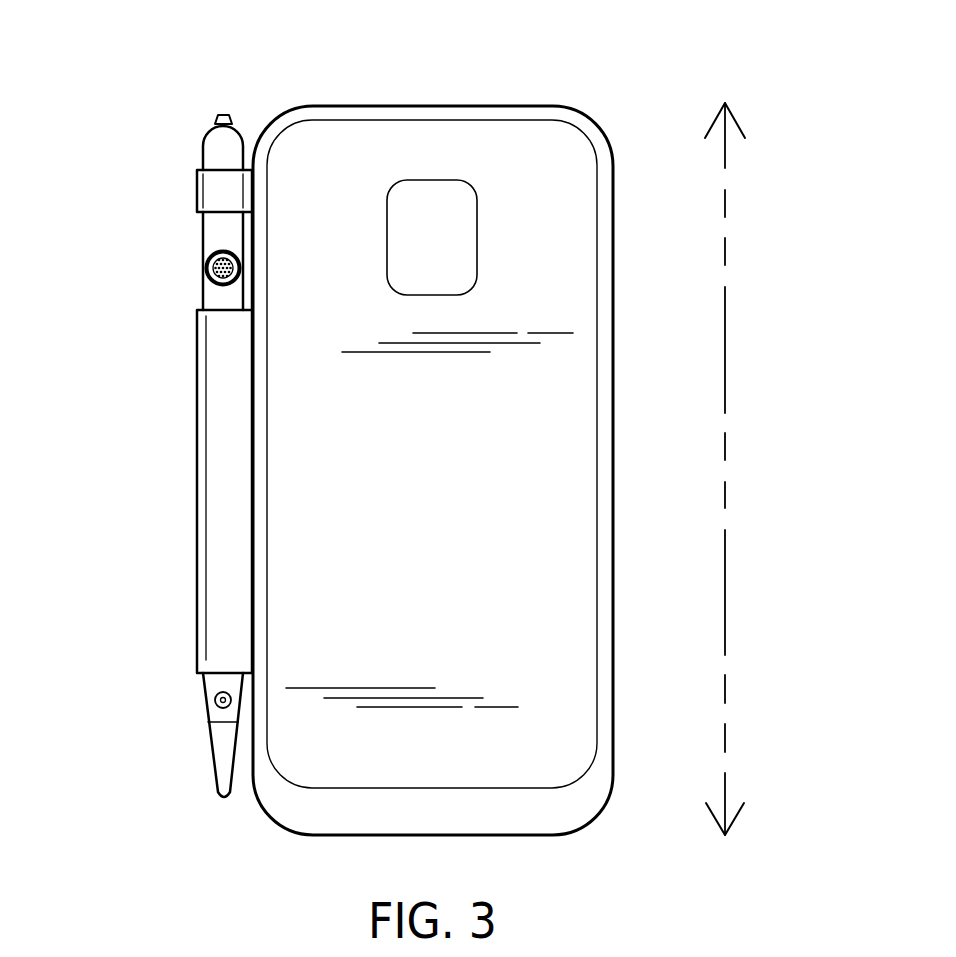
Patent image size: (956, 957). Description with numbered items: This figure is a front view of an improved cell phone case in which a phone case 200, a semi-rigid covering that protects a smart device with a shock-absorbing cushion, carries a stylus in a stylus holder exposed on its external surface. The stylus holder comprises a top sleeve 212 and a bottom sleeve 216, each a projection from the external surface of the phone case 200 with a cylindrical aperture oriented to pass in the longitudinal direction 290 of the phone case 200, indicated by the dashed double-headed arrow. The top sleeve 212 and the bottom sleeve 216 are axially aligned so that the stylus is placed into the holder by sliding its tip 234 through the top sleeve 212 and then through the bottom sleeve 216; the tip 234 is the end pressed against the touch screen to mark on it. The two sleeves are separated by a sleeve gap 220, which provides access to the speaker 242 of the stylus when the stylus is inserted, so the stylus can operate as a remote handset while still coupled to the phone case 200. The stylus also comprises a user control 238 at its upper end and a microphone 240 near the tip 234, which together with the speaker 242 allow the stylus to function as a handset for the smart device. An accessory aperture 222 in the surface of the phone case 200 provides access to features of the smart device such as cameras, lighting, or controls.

The phone case 200 is at (338, 836).
The accessory aperture 222 is at (448, 180).
The user control 238 is at (223, 113).
The top sleeve 212 is at (230, 190).
The sleeve gap 220 is at (185, 218).
The speaker 242 is at (226, 278).
The bottom sleeve 216 is at (220, 497).
The tip 234 is at (223, 757).
The microphone 240 is at (215, 703).
The longitudinal direction 290 is at (725, 367).